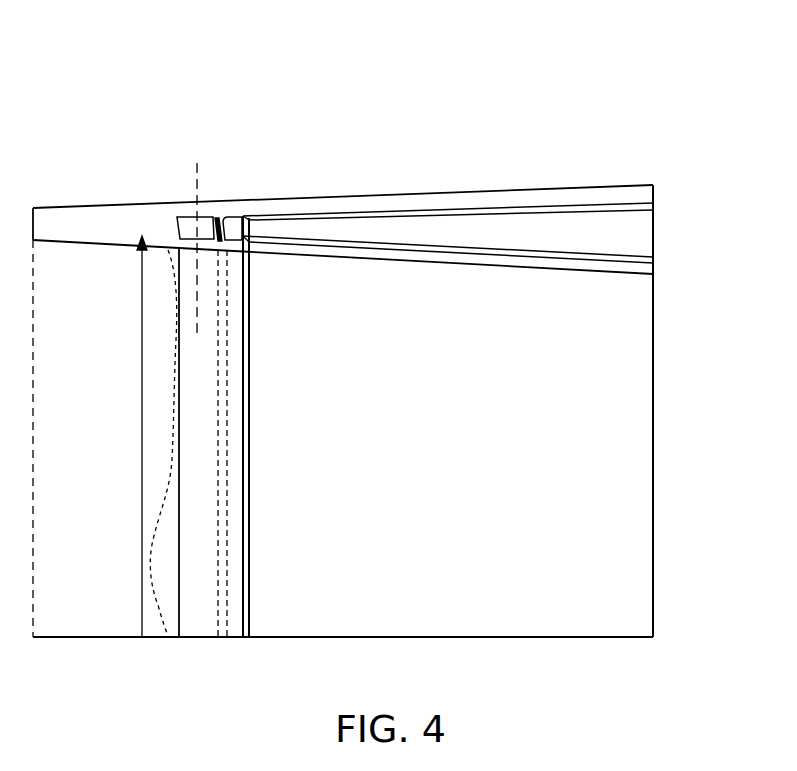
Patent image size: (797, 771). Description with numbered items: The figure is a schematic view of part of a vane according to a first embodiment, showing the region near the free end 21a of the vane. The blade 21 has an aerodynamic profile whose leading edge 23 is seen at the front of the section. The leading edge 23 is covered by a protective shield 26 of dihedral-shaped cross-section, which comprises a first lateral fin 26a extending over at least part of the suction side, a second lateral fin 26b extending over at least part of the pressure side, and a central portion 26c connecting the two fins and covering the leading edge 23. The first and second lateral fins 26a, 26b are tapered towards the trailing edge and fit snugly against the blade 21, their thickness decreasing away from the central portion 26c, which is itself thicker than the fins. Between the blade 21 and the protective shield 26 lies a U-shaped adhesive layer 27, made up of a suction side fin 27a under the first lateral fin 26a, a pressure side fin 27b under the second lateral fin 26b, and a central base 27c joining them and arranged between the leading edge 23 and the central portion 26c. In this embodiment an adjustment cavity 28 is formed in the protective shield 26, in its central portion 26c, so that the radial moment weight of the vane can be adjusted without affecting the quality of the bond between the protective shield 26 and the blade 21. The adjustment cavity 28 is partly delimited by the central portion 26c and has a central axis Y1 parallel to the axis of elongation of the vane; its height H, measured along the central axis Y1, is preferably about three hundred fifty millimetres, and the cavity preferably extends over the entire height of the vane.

The free end 21a is at (565, 118).
The blade 21 is at (642, 232).
The leading edge 23 is at (233, 230).
The protective shield 26 is at (647, 275).
The first lateral fin 26a is at (540, 268).
The second lateral fin 26b is at (443, 193).
The central portion 26c is at (88, 217).
The adhesive layer 27 is at (655, 193).
The suction side fin 27a is at (447, 248).
The pressure side fin 27b is at (603, 207).
The central base 27c is at (238, 238).
The adjustment cavity 28 is at (207, 228).
The central axis Y1 is at (195, 231).
The height H is at (120, 436).